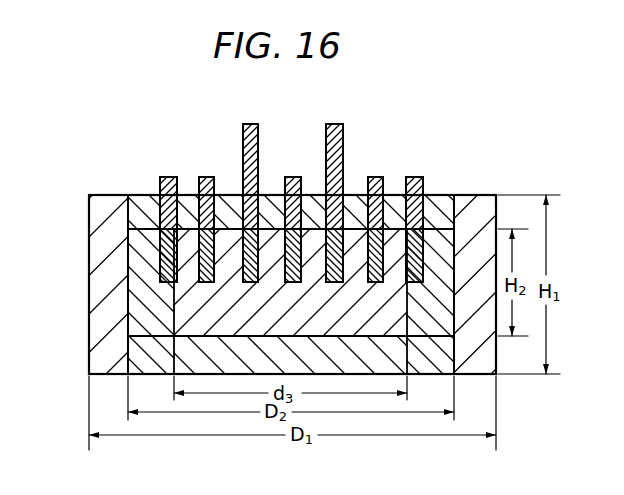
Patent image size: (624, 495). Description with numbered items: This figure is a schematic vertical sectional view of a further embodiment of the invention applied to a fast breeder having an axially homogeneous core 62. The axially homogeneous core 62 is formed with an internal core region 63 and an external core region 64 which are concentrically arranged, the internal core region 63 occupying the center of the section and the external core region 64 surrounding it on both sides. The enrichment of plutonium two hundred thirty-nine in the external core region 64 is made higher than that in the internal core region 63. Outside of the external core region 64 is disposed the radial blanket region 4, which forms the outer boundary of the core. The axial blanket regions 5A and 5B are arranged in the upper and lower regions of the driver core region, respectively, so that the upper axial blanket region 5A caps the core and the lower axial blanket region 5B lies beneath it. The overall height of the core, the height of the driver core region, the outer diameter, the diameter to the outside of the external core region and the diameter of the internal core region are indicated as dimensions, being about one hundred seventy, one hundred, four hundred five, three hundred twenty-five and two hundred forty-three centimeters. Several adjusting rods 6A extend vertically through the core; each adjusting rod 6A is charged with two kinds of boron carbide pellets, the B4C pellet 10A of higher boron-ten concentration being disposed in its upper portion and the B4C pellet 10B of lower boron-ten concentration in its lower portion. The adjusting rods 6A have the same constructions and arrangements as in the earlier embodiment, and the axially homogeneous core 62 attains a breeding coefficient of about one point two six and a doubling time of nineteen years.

The axially homogeneous core 62 is at (82, 252).
The radial blanket region 4 is at (97, 339).
The external core region 64 is at (132, 284).
The axial blanket region 5A is at (143, 205).
The axial blanket region 5B is at (417, 374).
The internal core region 63 is at (343, 133).
The B4C pellet 10A is at (295, 177).
The B4C pellet 10B is at (301, 265).
The adjusting rod 6A is at (423, 182).